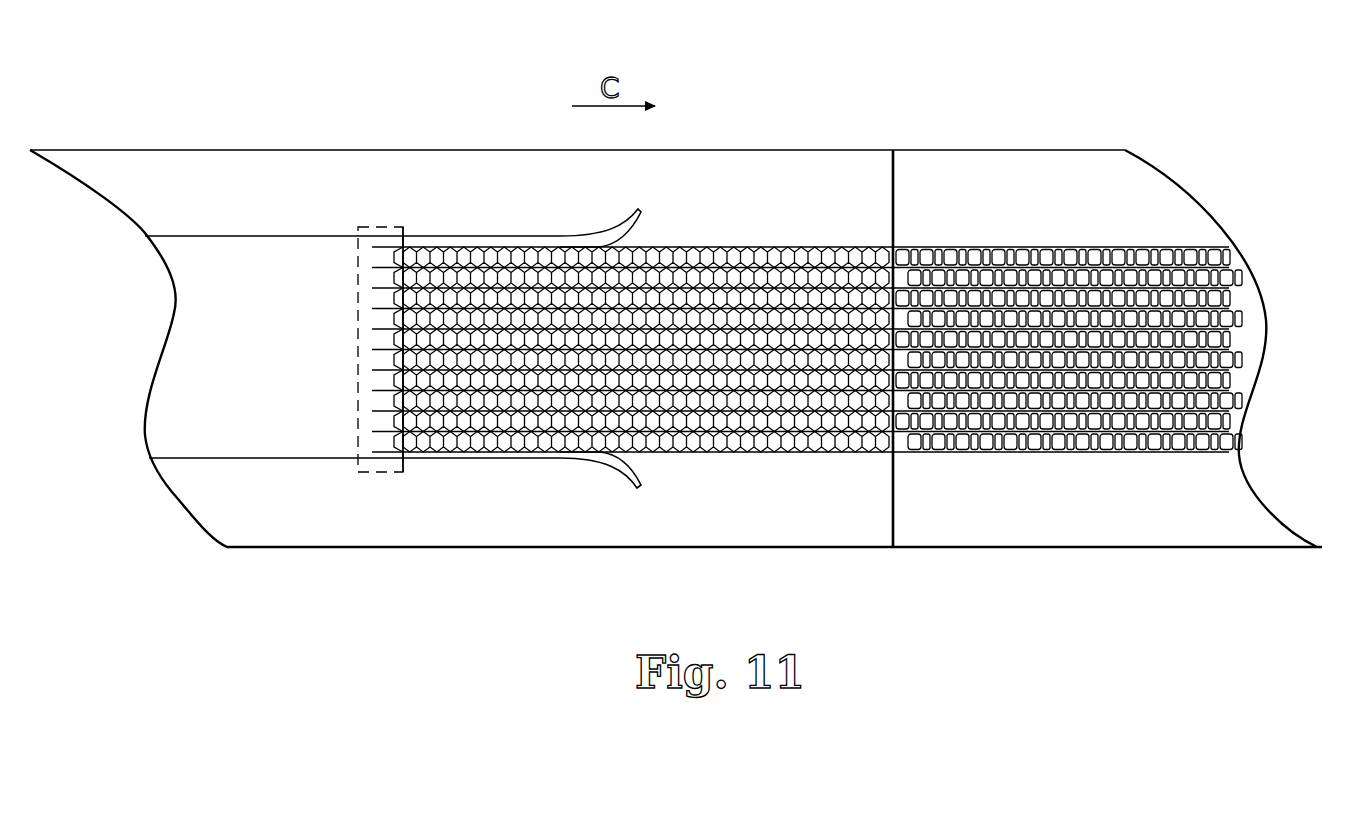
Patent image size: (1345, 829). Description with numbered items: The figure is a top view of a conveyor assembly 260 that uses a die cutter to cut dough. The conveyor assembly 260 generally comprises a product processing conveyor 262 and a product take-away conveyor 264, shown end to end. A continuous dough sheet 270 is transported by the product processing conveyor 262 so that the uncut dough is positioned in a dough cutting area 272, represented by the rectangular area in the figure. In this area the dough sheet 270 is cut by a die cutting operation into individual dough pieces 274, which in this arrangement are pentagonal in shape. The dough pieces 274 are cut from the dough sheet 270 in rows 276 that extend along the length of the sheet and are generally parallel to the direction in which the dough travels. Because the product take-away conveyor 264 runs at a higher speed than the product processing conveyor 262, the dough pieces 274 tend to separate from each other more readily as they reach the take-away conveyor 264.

The conveyor assembly 260 is at (879, 68).
The product processing conveyor 262 is at (856, 555).
The product take-away conveyor 264 is at (1131, 555).
The dough sheet 270 is at (282, 257).
The dough cutting area 272 is at (373, 227).
The dough pieces 274 is at (405, 252).
The rows 276 is at (799, 250).